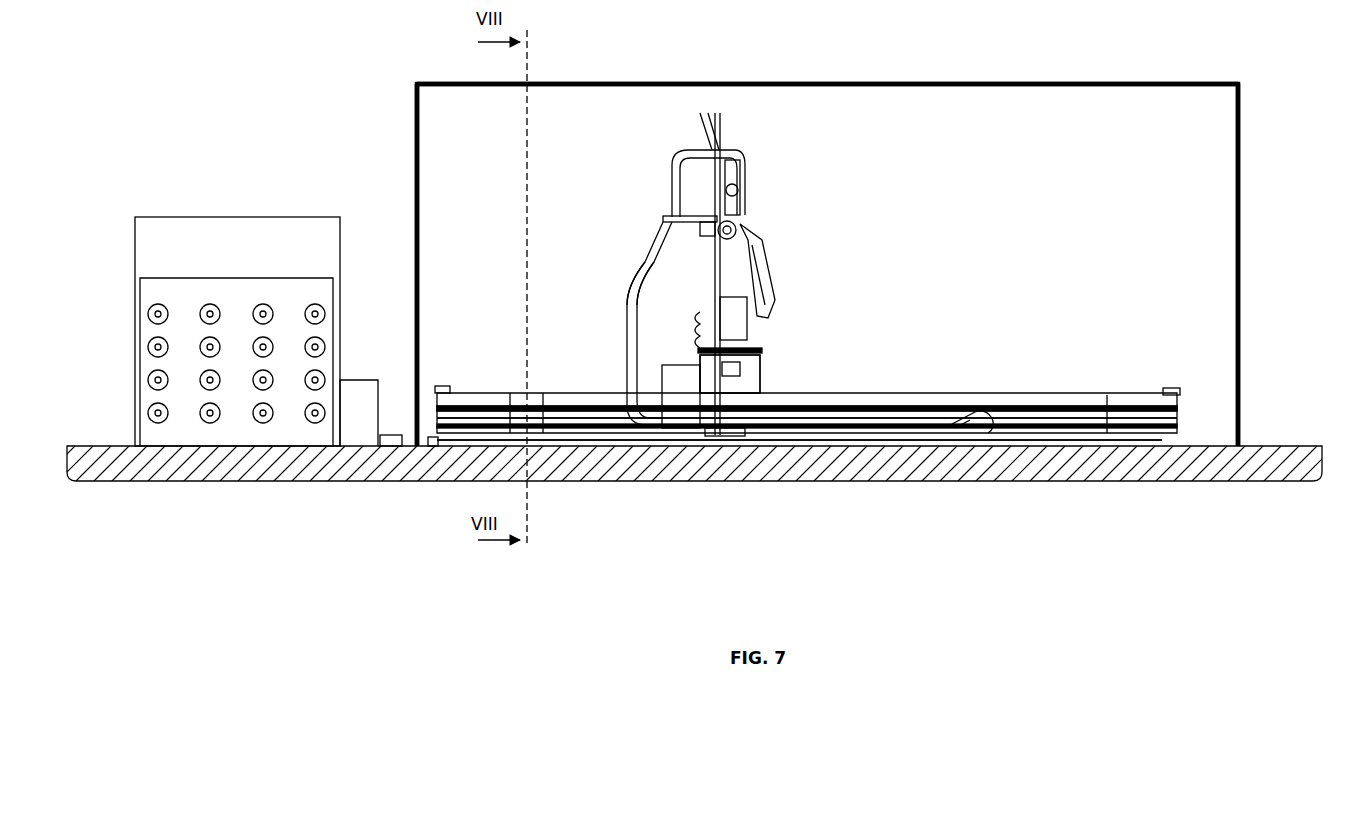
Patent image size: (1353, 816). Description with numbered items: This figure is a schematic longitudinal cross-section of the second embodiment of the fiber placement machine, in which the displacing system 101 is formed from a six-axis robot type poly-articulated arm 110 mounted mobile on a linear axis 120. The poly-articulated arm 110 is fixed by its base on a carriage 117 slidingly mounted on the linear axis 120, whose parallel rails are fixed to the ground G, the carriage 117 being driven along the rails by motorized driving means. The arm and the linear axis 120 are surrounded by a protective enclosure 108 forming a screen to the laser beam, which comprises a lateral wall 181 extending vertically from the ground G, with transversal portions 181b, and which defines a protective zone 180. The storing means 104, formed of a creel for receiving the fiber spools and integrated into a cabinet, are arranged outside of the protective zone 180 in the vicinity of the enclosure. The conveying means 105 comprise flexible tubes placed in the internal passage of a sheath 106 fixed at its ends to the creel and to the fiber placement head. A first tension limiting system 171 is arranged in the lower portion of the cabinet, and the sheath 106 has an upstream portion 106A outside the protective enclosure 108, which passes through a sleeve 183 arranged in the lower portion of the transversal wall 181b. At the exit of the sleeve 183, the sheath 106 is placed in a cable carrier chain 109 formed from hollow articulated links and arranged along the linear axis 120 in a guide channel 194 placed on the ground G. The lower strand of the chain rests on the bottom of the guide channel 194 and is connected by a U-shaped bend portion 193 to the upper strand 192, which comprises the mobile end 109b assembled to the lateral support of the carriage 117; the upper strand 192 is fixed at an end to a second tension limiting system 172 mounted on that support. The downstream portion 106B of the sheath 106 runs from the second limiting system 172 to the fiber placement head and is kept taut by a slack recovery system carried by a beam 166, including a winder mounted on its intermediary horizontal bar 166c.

The storing means 104 is at (166, 207).
The protective enclosure 108 is at (411, 117).
The lateral wall 181 is at (414, 186).
The transversal portion 181b is at (1241, 207).
The protective zone 180 is at (930, 106).
The conveying means 105 is at (673, 170).
The beam 166 is at (723, 142).
The intermediary horizontal bar 166c is at (670, 207).
The sheath 106 is at (641, 258).
The downstream portion 106B is at (629, 290).
The upstream portion 106A is at (390, 447).
The displacing system 101 is at (758, 230).
The poly-articulated arm 110 is at (778, 270).
The first tension limiting system 171 is at (372, 380).
The sleeve 183 is at (416, 447).
The carriage 117 is at (782, 394).
The upper strand 192 is at (854, 410).
The cable carrier chain 109 is at (922, 405).
The bend portion 193 is at (986, 406).
The linear axis 120 is at (1056, 394).
The guide channel 194 is at (1046, 438).
The second tension limiting system 172 is at (683, 430).
The mobile end 109b is at (727, 436).
The ground G is at (1278, 462).